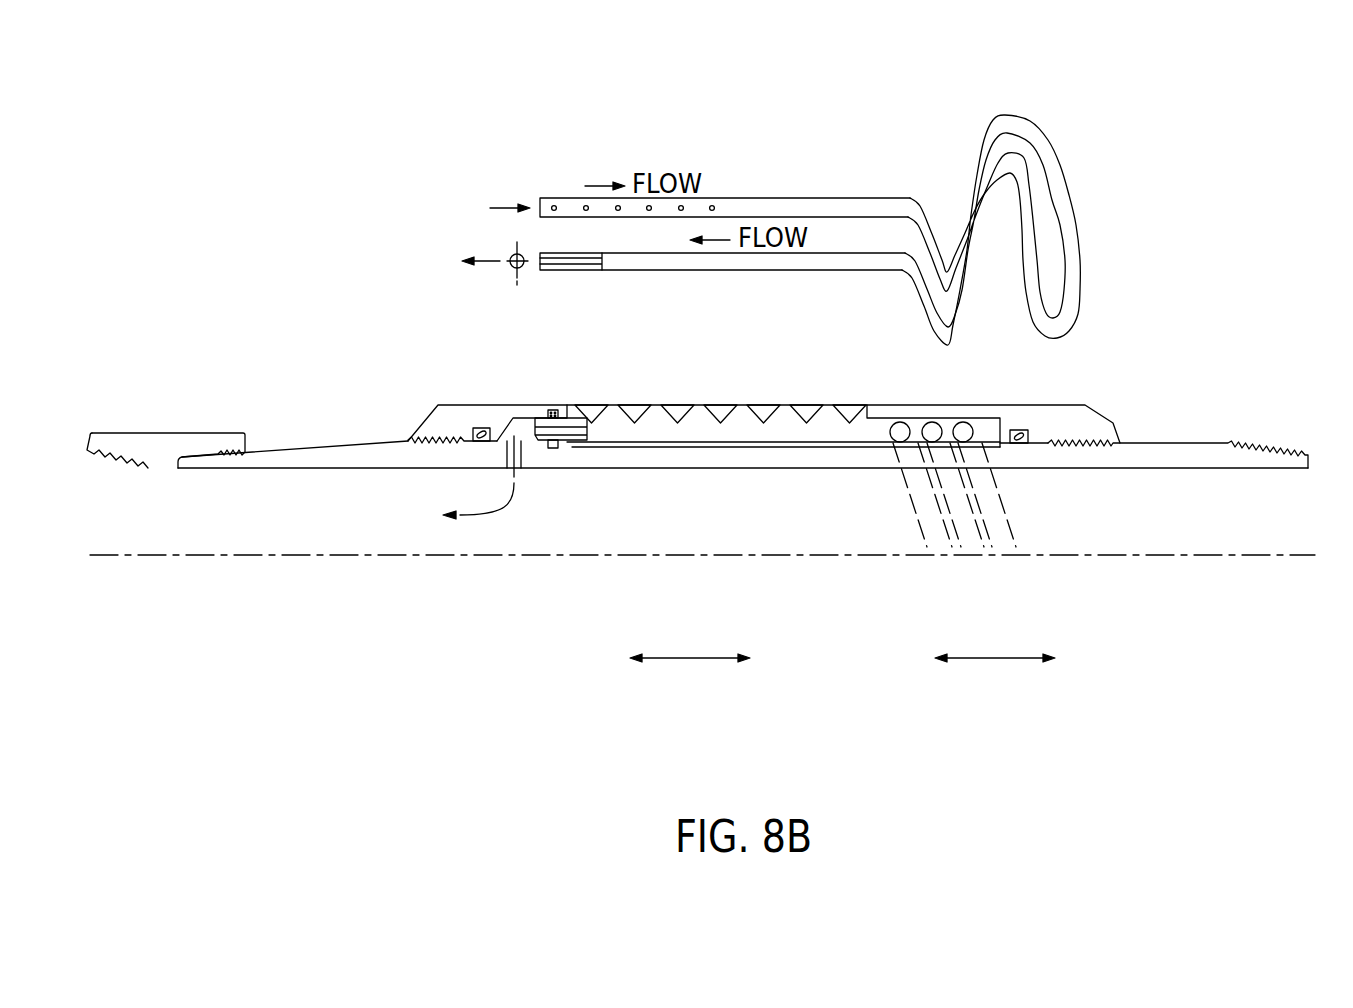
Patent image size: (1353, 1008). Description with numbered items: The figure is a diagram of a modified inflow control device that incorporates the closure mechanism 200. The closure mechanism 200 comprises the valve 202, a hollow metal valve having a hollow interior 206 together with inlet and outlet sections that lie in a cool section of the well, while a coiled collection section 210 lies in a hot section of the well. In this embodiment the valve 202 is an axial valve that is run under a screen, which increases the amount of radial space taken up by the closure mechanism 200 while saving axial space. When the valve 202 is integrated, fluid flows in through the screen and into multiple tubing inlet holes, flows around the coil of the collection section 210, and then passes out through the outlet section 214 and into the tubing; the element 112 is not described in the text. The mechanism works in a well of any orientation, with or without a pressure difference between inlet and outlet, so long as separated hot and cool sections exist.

The closure mechanism 200 is at (200, 130).
The perforated inlet tube 112 is at (573, 200).
The valve 202 is at (867, 207).
The hollow interior 206 is at (867, 263).
The collection section 210 is at (1060, 325).
The outlet section 214 is at (575, 262).